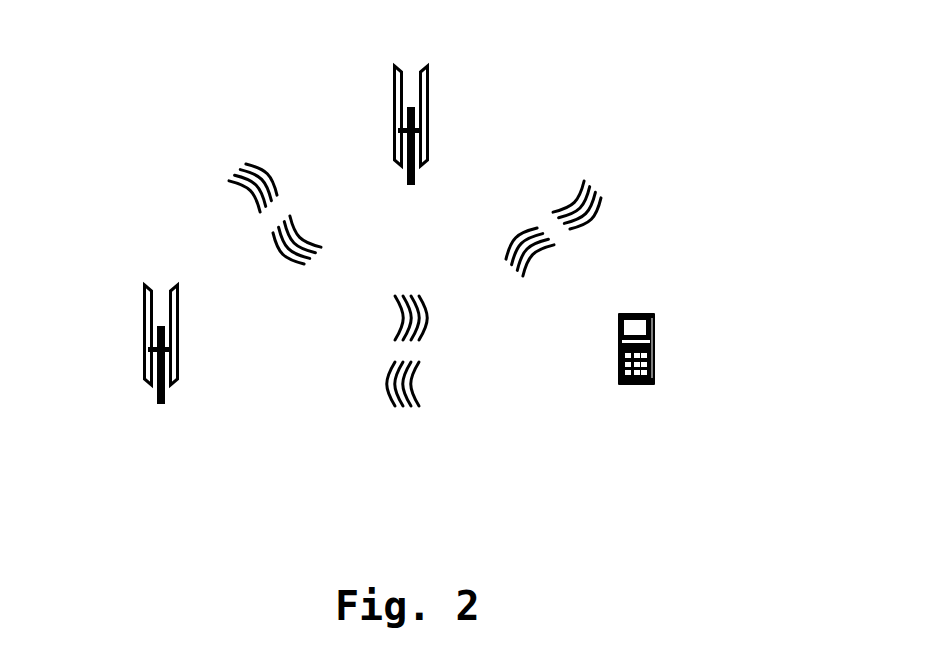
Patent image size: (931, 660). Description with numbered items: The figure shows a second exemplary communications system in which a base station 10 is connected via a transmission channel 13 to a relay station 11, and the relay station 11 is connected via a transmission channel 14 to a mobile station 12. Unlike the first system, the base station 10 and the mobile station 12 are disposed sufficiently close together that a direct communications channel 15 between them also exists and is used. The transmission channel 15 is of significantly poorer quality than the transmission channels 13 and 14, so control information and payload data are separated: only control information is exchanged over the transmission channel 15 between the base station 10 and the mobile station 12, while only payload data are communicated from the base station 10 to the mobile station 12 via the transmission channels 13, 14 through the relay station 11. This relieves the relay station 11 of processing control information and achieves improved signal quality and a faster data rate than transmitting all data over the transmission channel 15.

The base station 10 is at (145, 290).
The relay station 11 is at (395, 68).
The mobile station 12 is at (655, 343).
The transmission channel 13 is at (248, 170).
The transmission channel 14 is at (582, 180).
The communications channel 15 is at (403, 407).